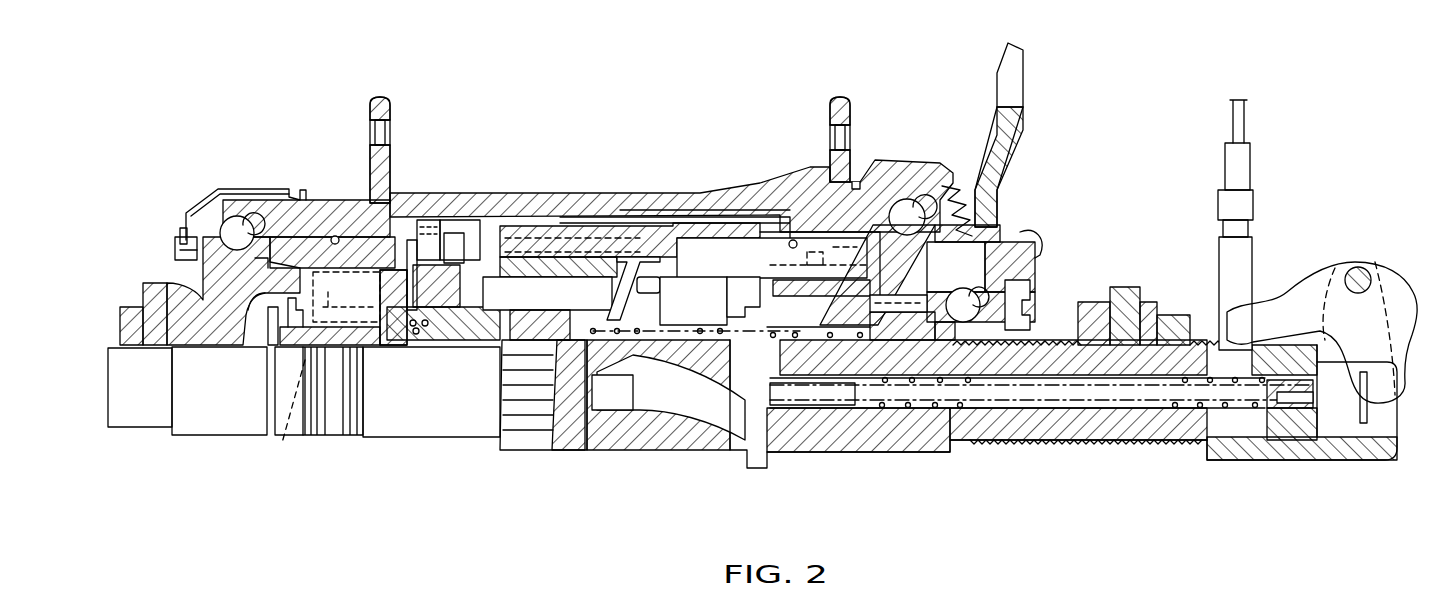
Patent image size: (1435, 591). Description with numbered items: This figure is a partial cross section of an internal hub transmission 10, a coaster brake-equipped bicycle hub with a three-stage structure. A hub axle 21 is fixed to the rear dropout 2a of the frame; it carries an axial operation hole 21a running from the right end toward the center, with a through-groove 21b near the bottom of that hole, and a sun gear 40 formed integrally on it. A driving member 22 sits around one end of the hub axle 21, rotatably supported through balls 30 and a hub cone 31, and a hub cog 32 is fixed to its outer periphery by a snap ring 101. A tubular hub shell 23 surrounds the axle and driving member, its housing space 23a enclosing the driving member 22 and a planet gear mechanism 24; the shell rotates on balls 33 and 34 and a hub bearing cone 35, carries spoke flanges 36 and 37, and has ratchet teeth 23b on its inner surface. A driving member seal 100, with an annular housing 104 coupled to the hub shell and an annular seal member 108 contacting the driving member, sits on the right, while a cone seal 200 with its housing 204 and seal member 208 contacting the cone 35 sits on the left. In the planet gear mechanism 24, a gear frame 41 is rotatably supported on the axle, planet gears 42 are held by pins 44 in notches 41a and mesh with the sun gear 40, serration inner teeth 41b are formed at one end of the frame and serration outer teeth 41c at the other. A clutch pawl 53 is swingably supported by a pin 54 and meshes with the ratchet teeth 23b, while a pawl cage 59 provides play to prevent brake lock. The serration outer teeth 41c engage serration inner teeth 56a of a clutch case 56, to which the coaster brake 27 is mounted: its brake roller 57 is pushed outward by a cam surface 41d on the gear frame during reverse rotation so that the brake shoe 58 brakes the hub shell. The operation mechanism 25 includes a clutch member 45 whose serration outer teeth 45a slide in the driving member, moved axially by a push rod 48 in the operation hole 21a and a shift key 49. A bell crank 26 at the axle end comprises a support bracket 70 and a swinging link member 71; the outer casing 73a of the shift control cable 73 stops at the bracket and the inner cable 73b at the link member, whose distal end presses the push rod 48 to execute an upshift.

The cone seal 200 is at (179, 158).
The annular housing 204 is at (187, 207).
The annular seal member 208 is at (179, 236).
The balls 34 is at (236, 232).
The hub bearing cone 35 is at (175, 282).
The brake shoe 58 is at (303, 240).
The coaster brake 27 is at (362, 256).
The flange 37 is at (380, 95).
The serration inner teeth 56a is at (417, 232).
The serration outer teeth 41c is at (450, 303).
The housing space 23a is at (497, 228).
The pin 44 is at (523, 287).
The hub shell 23 is at (567, 207).
The planet gear mechanism 24 is at (640, 243).
The operation mechanism 25 is at (713, 305).
The pawl cage 59 is at (700, 252).
The ratchet teeth 23b is at (737, 217).
The pin 54 is at (763, 247).
The flange 36 is at (840, 95).
The annular housing 104 is at (857, 183).
The driving member seal 100 is at (947, 125).
The balls 33 is at (908, 216).
The annular seal member 108 is at (963, 220).
The internal hub transmission 10 is at (1052, 157).
The hub cog 32 is at (1022, 60).
The driving member 22 is at (997, 228).
The snap ring 101 is at (1040, 230).
The balls 30 is at (975, 310).
The hub cone 31 is at (1037, 331).
The rear dropout 2a is at (1125, 288).
The inner cable 73b is at (1235, 123).
The shift control cable 73 is at (1222, 157).
The outer casing 73a is at (1230, 178).
The bell crank 26 is at (1329, 262).
The link member 71 is at (1410, 300).
The brake roller 57 is at (235, 413).
The clutch case 56 is at (390, 310).
The cam surface 41d is at (385, 320).
The gear frame 41 is at (450, 340).
The planet gear 42 is at (525, 335).
The sun gear 40 is at (533, 453).
The notch 41a is at (578, 335).
The serration inner teeth 41b is at (650, 290).
The clutch pawl 53 is at (743, 273).
The shift key 49 is at (757, 470).
The through-groove 21b is at (773, 445).
The clutch member 45 is at (878, 328).
The serration outer teeth 45a is at (925, 340).
The hub axle 21 is at (1060, 446).
The push rod 48 is at (1127, 425).
The operation hole 21a is at (1187, 405).
The support bracket 70 is at (1353, 458).